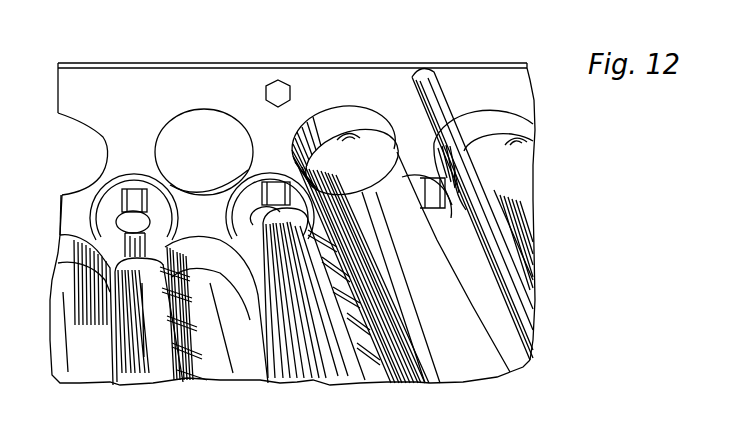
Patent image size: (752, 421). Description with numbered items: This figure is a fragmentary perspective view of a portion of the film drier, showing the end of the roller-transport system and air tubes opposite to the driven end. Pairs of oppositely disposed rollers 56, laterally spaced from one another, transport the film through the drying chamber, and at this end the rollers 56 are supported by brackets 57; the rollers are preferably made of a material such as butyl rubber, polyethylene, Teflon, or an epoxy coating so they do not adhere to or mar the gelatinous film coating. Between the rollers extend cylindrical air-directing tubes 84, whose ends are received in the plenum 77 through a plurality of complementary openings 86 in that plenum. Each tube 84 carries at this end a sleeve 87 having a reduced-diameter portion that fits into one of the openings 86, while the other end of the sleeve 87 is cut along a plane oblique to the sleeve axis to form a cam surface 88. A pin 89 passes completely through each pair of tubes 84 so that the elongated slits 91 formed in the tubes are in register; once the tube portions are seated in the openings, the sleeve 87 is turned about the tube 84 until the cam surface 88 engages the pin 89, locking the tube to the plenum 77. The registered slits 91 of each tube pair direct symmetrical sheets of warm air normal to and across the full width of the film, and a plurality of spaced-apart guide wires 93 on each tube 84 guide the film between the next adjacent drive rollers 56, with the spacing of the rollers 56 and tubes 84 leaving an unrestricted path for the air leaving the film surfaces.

The plenum 77 is at (238, 74).
The openings 86 is at (143, 102).
The brackets 57 is at (230, 217).
The sleeve 87 is at (352, 108).
The cam surface 88 is at (58, 267).
The pin 89 is at (353, 133).
The cylindrical air-directing tubes 84 is at (185, 377).
The elongated slits 91 is at (70, 373).
The guide wires 93 is at (175, 352).
The rollers 56 is at (328, 367).